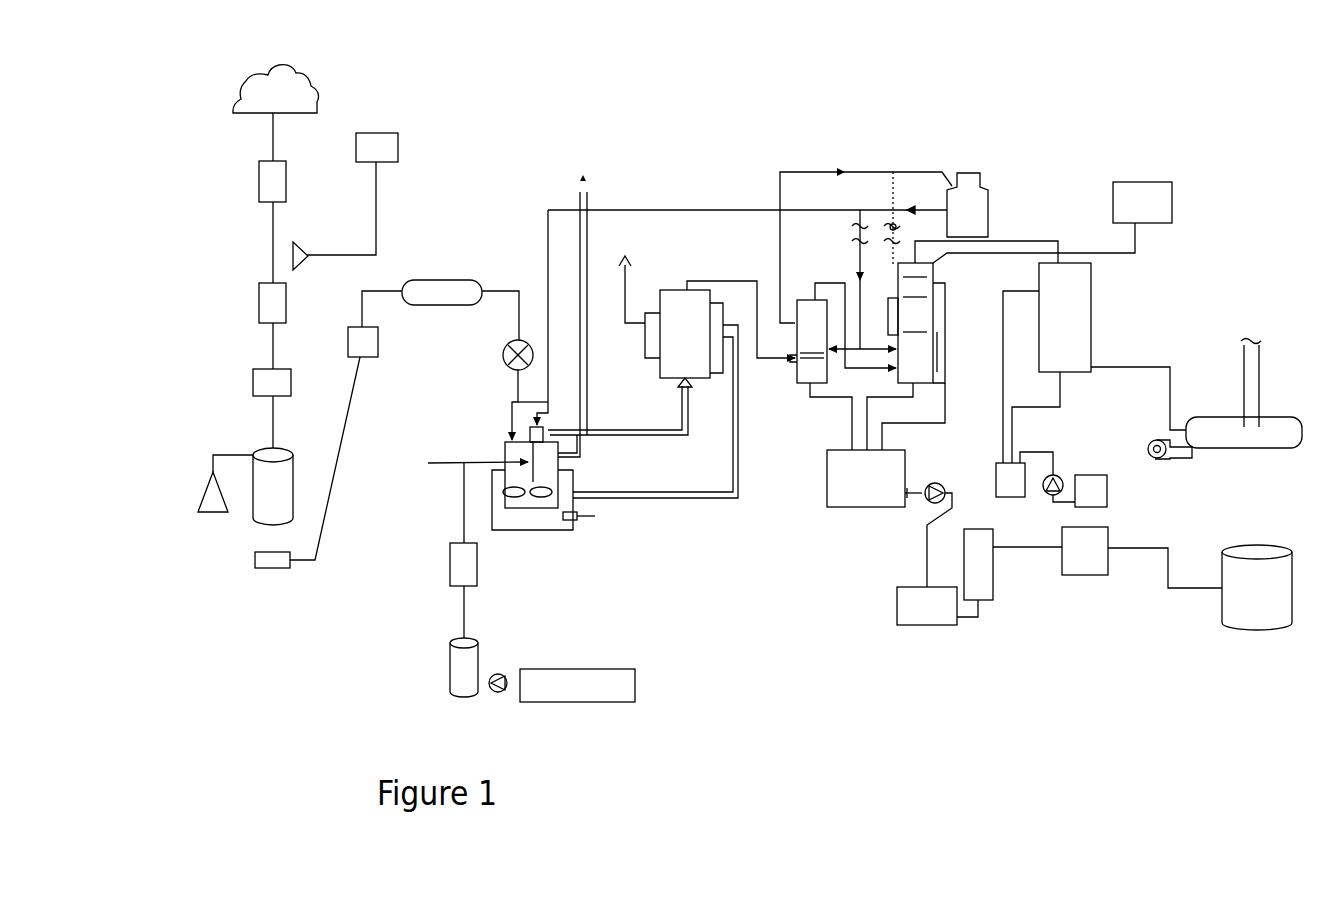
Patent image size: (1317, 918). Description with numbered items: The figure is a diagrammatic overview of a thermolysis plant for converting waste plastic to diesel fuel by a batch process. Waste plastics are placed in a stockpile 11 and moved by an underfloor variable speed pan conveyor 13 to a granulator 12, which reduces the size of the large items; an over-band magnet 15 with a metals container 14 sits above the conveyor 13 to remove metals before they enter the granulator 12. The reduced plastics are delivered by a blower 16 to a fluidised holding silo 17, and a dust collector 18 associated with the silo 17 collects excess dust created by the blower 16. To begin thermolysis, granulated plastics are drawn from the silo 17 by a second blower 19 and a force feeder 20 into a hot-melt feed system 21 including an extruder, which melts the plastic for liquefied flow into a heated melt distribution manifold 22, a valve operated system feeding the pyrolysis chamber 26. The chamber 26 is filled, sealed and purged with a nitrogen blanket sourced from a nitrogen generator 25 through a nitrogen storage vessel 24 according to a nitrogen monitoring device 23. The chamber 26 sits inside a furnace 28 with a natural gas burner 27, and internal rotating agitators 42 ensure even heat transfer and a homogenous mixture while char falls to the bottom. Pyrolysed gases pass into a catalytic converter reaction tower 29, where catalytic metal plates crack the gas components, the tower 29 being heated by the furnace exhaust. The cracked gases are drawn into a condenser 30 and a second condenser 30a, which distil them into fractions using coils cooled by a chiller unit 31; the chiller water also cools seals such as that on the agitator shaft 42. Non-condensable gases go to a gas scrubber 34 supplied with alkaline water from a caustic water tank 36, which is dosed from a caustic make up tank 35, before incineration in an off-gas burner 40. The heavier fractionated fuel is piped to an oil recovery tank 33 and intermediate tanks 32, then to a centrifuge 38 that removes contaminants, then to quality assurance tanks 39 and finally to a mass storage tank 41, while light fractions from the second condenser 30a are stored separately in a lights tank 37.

The stockpile 11 is at (271, 95).
The granulator 12 is at (266, 303).
The pan conveyor 13 is at (268, 183).
The metals container 14 is at (400, 148).
The over-band magnet 15 is at (303, 254).
The blower 16 is at (262, 382).
The fluidised holding silo 17 is at (265, 511).
The dust collector 18 is at (211, 489).
The second blower 19 is at (284, 571).
The force feeder 20 is at (370, 346).
The hot-melt feed system 21 is at (438, 302).
The heated melt distribution manifold 22 is at (505, 363).
The nitrogen monitoring device 23 is at (449, 563).
The nitrogen storage vessel 24 is at (450, 663).
The nitrogen generator 25 is at (637, 685).
The pyrolysis chamber 26 is at (528, 508).
The natural gas burner 27 is at (592, 521).
The furnace 28 is at (550, 527).
The catalytic converter reaction tower 29 is at (676, 288).
The condenser 30 is at (796, 386).
The second condenser 30a is at (935, 320).
The water chiller unit 31 is at (990, 211).
The intermediate tank 32 is at (915, 628).
The oil recovery tank 33 is at (862, 500).
The gas scrubber 34 is at (1093, 313).
The caustic make up tank 35 is at (1109, 492).
The caustic water tank 36 is at (1009, 499).
The lights tank 37 is at (1174, 203).
The centrifuge 38 is at (994, 574).
The quality assurance tank 39 is at (1083, 577).
The off-gas burner 40 is at (1237, 440).
The mass storage tank 41 is at (1252, 630).
The agitator 42 is at (715, 208).